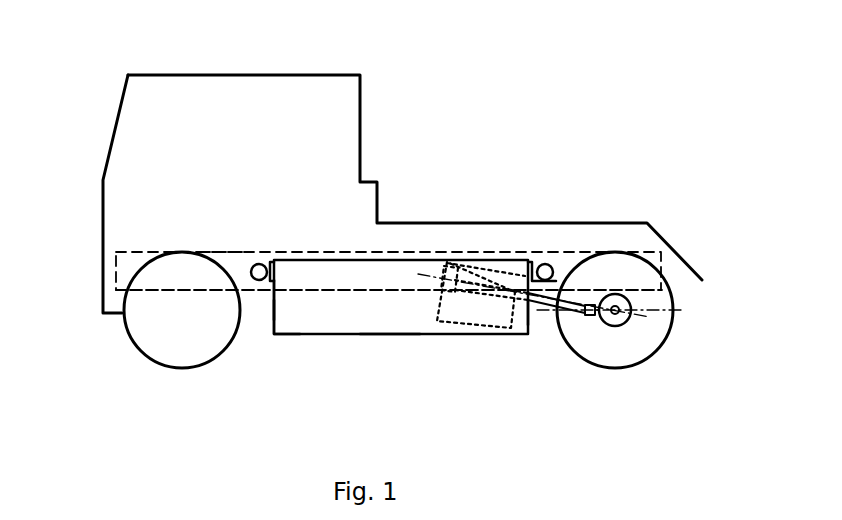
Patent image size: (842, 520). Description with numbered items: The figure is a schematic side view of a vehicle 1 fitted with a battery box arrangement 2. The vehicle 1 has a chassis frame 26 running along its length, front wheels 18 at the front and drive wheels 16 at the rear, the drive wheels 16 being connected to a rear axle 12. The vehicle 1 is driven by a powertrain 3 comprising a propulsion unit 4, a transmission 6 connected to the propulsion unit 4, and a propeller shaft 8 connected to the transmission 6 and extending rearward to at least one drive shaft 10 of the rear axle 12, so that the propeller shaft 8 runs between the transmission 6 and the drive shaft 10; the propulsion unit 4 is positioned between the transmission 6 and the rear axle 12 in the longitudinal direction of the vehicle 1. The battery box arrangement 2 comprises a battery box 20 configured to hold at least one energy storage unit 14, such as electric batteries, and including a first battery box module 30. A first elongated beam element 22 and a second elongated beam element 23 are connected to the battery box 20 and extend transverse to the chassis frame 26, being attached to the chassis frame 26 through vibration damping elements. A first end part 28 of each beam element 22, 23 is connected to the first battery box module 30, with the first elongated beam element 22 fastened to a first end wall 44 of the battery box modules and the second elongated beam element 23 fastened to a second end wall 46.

The vehicle 1 is at (428, 70).
The battery box arrangement 2 is at (327, 352).
The powertrain 3 is at (454, 364).
The propulsion unit 4 is at (465, 328).
The transmission 6 is at (445, 258).
The propeller shaft 8 is at (570, 302).
The drive shaft 10 is at (615, 314).
The rear axle 12 is at (627, 322).
The energy storage unit 14 is at (317, 252).
The drive wheels 16 is at (608, 252).
The front wheels 18 is at (140, 256).
The battery box 20 is at (295, 334).
The first elongated beam element 22 is at (257, 263).
The second elongated beam element 23 is at (547, 263).
The chassis frame 26 is at (225, 252).
The first end part 28 is at (242, 306).
The first battery box module 30 is at (392, 334).
The first end wall 44 is at (273, 307).
The second end wall 46 is at (533, 320).